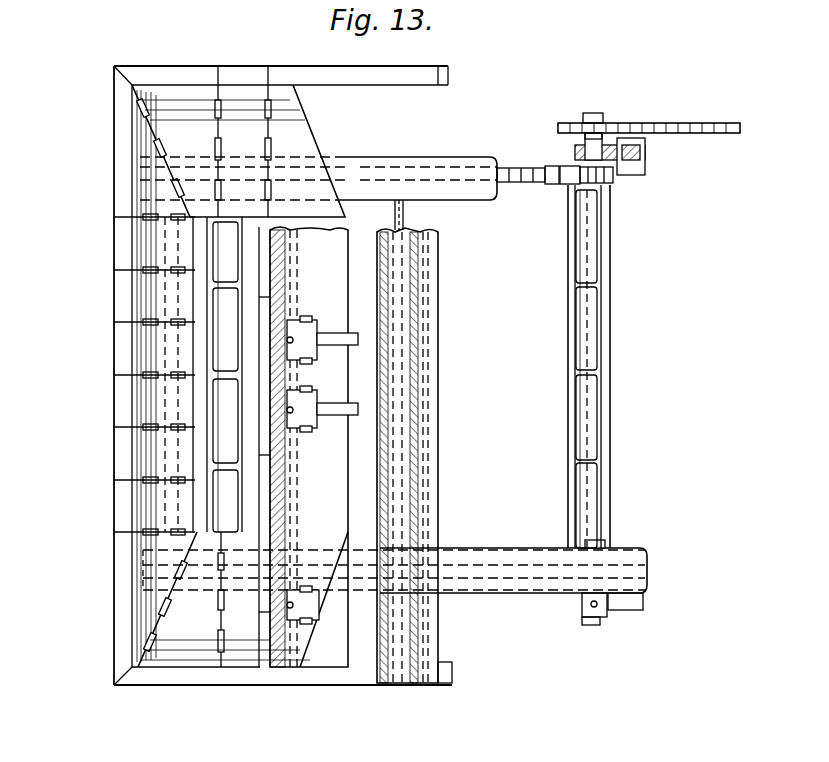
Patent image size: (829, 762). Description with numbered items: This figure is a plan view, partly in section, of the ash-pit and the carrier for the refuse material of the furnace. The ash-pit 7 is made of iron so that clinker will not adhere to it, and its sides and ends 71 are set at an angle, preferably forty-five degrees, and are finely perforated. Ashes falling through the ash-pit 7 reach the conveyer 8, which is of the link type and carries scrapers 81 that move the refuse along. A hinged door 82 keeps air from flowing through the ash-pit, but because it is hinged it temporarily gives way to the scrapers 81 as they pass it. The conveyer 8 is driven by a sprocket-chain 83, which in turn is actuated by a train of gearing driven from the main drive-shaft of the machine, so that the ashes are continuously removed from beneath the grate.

The ash-pit 7 is at (170, 394).
The sides and ends 71 is at (195, 100).
The scrapers 81 is at (213, 343).
The hinged door 82 is at (308, 447).
The sprocket-chain 83 is at (667, 123).
The conveyer 8 is at (617, 362).